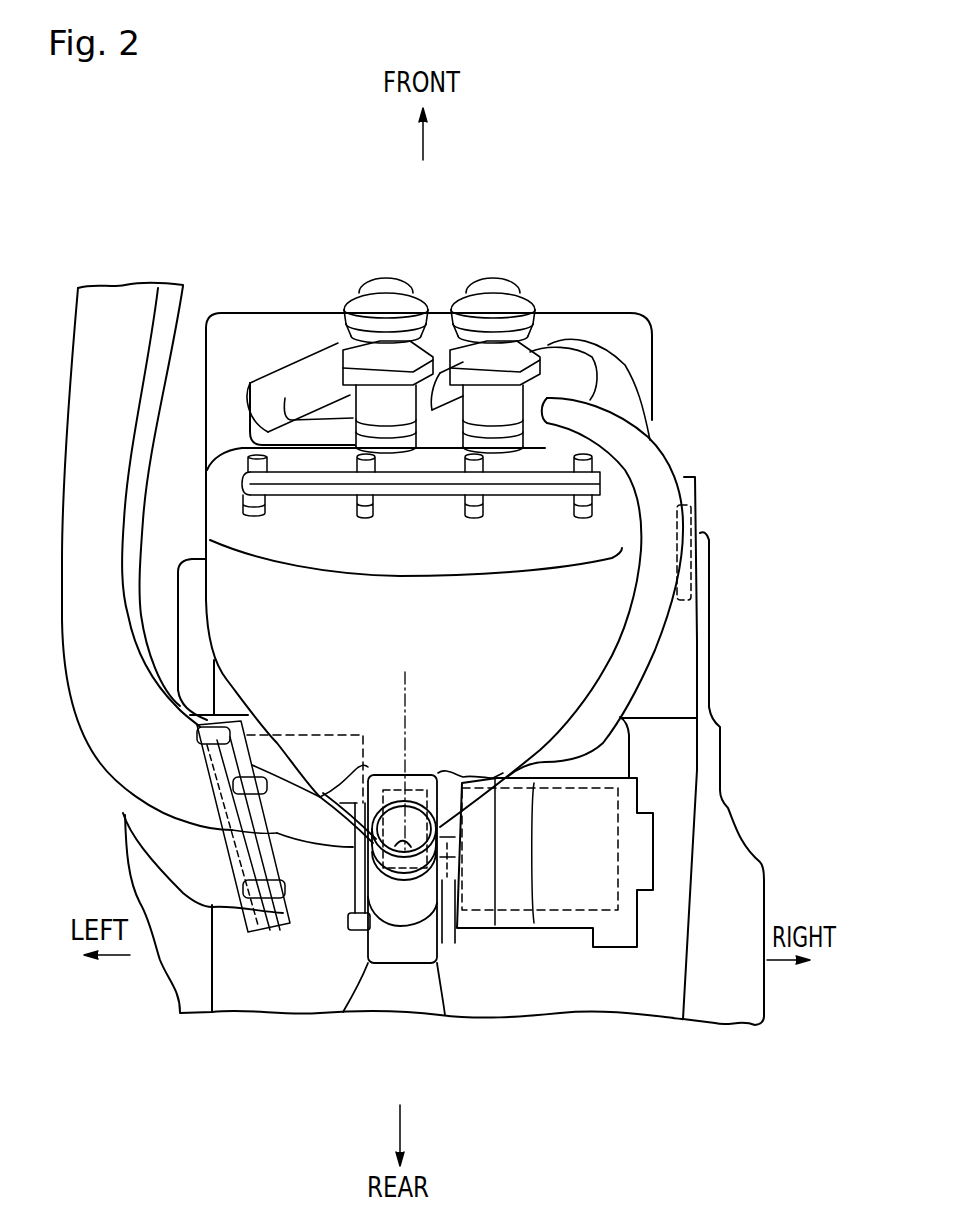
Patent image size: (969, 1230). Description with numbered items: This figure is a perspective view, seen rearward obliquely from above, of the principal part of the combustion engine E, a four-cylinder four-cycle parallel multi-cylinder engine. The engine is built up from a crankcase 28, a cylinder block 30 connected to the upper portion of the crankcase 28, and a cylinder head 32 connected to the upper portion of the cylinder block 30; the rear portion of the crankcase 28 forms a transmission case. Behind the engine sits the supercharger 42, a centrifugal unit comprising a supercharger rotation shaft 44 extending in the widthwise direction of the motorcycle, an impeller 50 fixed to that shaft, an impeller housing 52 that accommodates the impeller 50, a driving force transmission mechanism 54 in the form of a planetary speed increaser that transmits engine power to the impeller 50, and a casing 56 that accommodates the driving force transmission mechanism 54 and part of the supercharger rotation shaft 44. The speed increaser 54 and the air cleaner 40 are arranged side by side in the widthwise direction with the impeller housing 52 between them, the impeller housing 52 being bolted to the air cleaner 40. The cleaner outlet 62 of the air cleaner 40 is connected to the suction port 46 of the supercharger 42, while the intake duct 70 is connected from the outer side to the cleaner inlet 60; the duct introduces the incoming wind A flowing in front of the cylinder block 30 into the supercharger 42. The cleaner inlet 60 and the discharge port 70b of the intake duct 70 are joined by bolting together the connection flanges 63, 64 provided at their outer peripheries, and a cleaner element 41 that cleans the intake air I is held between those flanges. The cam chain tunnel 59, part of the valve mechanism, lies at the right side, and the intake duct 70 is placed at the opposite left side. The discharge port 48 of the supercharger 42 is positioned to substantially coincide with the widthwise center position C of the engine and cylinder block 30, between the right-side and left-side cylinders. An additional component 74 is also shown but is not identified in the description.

The crankcase 28 is at (660, 1000).
The cylinder block 30 is at (212, 479).
The cylinder head 32 is at (267, 328).
The air cleaner 40 is at (313, 900).
The cleaner element 41 is at (235, 874).
The supercharger 42 is at (402, 985).
The supercharger rotation shaft 44 is at (467, 907).
The suction port 46 is at (357, 880).
The discharge port 48 is at (410, 856).
The impeller 50 is at (443, 863).
The impeller housing 52 is at (387, 957).
The driving force transmission mechanism 54 is at (590, 913).
The casing 56 is at (560, 923).
The cam chain tunnel 59 is at (690, 522).
The cleaner inlet 60 is at (232, 847).
The cleaner outlet 62 is at (358, 932).
The connection flange 63 is at (243, 932).
The connection flange 64 is at (278, 930).
The intake duct 70 is at (130, 300).
The discharge port 70b is at (230, 793).
The crankcase 74 is at (237, 527).
The incoming wind A is at (145, 172).
The center position C is at (408, 693).
The combustion engine E is at (190, 1021).
The intake air I is at (104, 646).